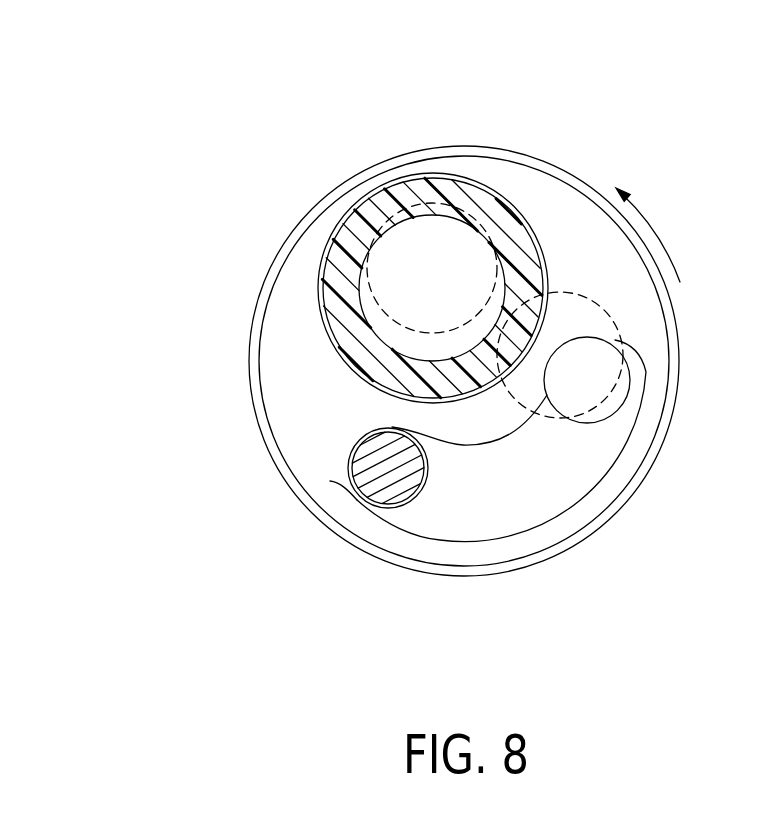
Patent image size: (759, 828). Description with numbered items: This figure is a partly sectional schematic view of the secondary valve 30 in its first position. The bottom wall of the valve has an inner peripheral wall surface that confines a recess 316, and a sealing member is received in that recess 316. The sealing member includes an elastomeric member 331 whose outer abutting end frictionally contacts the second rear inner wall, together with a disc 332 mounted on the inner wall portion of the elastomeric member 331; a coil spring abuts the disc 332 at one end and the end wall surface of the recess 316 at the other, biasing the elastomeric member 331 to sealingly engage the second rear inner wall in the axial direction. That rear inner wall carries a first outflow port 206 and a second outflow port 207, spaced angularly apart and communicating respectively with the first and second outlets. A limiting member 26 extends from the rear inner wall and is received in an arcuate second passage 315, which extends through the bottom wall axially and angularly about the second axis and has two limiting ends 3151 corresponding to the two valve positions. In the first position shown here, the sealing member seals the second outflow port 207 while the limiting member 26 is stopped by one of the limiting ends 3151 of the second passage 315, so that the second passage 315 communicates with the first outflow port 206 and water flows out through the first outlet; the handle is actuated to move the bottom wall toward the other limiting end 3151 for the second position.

The secondary valve 30 is at (565, 145).
The recess 316 is at (340, 217).
The elastomeric member 331 is at (430, 188).
The disc 332 is at (398, 238).
The second outflow port 207 is at (330, 303).
The first outflow port 206 is at (590, 363).
The second passage 315 is at (563, 497).
The limiting ends 3151 is at (330, 481).
The limiting member 26 is at (391, 502).